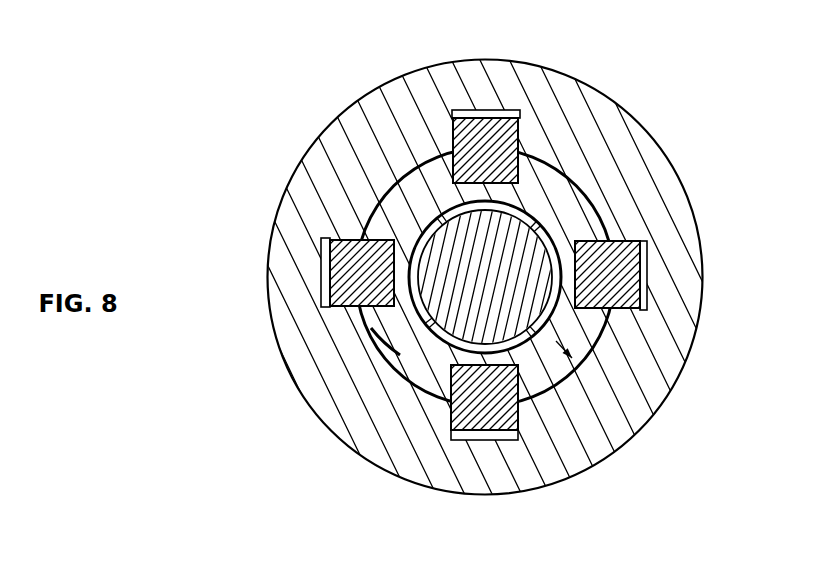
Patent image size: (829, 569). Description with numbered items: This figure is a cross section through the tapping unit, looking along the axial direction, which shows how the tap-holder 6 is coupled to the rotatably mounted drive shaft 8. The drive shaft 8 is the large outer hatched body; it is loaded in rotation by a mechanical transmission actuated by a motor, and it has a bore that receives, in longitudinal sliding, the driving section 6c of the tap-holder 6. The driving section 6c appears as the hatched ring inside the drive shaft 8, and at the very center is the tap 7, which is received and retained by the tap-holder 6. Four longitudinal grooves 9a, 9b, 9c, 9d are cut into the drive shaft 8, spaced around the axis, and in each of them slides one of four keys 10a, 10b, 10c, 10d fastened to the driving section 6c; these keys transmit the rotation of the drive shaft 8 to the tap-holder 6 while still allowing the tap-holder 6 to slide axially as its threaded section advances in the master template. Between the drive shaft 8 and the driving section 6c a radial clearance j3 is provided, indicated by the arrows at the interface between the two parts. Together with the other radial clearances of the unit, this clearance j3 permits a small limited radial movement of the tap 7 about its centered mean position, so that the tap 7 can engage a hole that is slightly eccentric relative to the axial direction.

The tap-holder 6 is at (397, 193).
The driving section 6c is at (400, 345).
The tap 7 is at (478, 287).
The drive shaft 8 is at (606, 114).
The longitudinal groove 9a is at (485, 117).
The longitudinal groove 9b is at (645, 276).
The longitudinal groove 9c is at (476, 435).
The longitudinal groove 9d is at (330, 283).
The key 10a is at (451, 116).
The key 10b is at (647, 240).
The key 10c is at (452, 434).
The key 10d is at (335, 262).
The radial clearance j3 is at (590, 371).